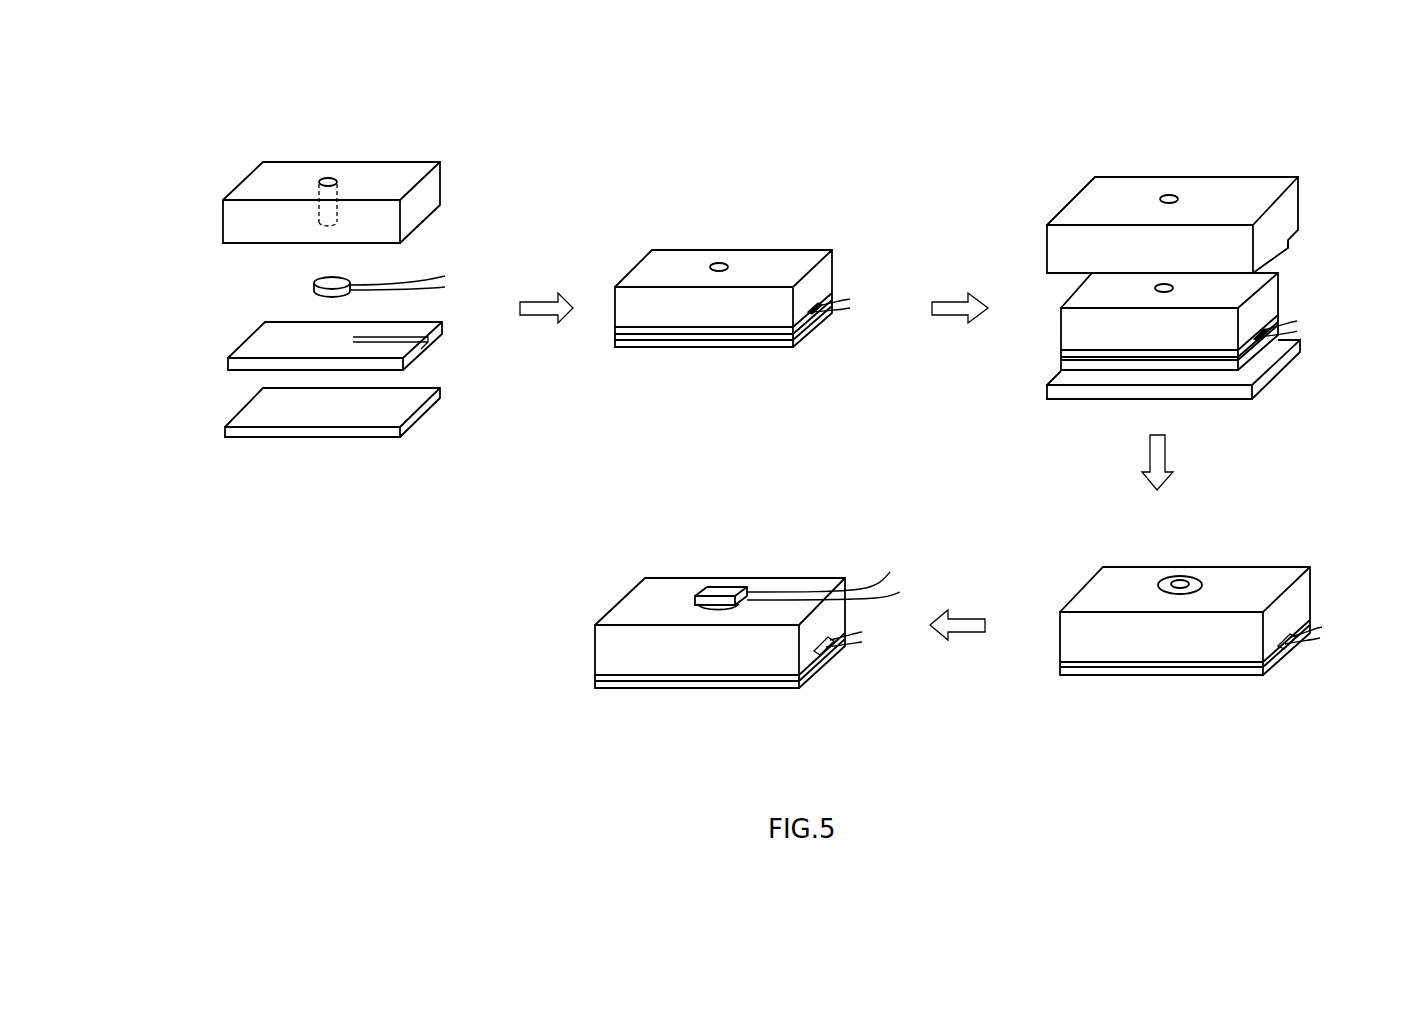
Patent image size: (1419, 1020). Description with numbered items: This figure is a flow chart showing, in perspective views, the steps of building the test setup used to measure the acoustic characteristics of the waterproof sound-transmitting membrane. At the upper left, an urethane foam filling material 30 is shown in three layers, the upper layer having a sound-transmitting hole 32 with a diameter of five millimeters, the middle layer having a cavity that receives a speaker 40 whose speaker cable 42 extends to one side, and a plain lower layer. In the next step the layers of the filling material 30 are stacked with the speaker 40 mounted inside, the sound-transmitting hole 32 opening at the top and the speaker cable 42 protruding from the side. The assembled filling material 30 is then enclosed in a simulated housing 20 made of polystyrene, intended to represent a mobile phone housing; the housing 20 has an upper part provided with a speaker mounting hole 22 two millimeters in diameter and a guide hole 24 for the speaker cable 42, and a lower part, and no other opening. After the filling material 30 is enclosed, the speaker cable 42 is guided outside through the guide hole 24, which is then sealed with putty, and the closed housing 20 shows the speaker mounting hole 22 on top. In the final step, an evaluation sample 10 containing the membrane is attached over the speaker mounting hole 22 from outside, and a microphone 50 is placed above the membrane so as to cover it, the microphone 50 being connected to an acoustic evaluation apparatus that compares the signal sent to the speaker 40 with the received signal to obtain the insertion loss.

The evaluation sample 10 is at (1165, 580).
The simulated housing 20 is at (1293, 200).
The speaker mounting hole 22 is at (1169, 194).
The guide hole 24 is at (1277, 245).
The filling material 30 is at (232, 214).
The sound-transmitting hole 32 is at (328, 177).
The speaker 40 is at (332, 282).
The speaker cable 42 is at (452, 270).
The microphone 50 is at (720, 590).